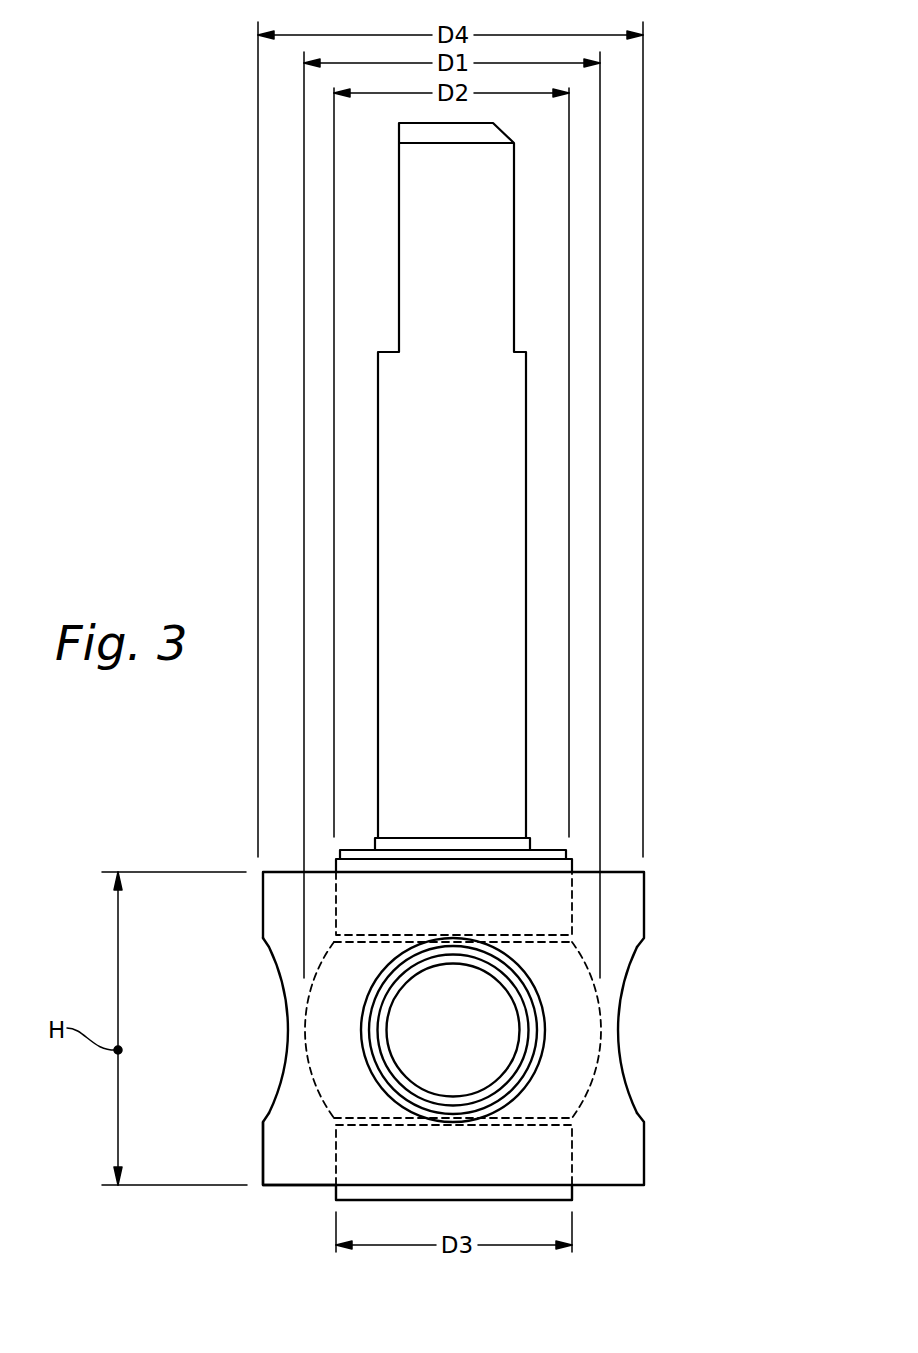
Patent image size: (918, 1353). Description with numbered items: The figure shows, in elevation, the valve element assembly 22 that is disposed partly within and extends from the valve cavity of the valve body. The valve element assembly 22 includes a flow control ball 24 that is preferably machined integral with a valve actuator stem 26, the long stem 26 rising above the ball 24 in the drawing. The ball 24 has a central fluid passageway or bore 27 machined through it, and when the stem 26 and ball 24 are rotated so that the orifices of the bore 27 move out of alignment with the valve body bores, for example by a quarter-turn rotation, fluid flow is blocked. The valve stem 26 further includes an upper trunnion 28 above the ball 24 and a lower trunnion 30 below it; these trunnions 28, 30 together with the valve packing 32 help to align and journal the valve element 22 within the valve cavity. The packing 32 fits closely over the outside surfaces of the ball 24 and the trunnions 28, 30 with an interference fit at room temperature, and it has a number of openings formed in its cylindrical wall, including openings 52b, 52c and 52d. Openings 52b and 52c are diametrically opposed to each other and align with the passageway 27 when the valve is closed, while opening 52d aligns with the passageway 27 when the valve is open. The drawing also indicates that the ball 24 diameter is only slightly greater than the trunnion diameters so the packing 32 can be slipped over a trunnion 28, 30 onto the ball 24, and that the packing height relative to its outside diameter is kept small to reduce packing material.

The valve element assembly 22 is at (692, 534).
The flow control ball 24 is at (592, 1078).
The valve actuator stem 26 is at (438, 443).
The central fluid passageway or bore 27 is at (421, 1083).
The upper trunnion 28 is at (517, 903).
The lower trunnion 30 is at (515, 1145).
The valve packing 32 is at (294, 1147).
The opening 52b is at (622, 1012).
The opening 52c is at (284, 1000).
The opening 52d is at (363, 1048).